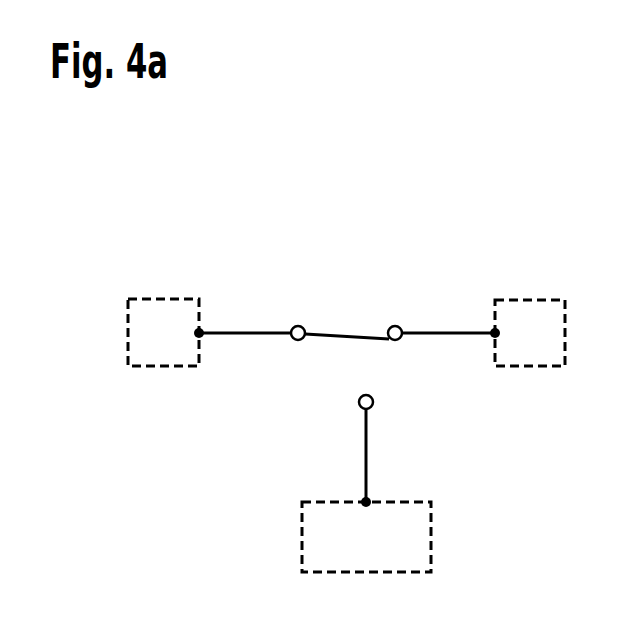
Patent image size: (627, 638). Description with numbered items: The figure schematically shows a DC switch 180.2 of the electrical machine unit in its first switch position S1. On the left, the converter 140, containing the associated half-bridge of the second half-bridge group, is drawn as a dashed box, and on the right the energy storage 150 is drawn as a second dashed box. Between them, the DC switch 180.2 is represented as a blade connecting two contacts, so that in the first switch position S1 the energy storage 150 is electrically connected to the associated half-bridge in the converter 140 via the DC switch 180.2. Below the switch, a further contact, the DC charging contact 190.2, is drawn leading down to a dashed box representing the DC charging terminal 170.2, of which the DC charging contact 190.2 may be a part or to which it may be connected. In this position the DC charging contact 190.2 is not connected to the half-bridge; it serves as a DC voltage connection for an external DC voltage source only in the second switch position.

The converter 140 is at (163, 298).
The energy storage 150 is at (531, 298).
The DC switch 180.2 is at (345, 333).
The DC charging contact 190.2 is at (366, 500).
The DC charging terminal 170.2 is at (431, 537).
The first switch position S1 is at (268, 416).